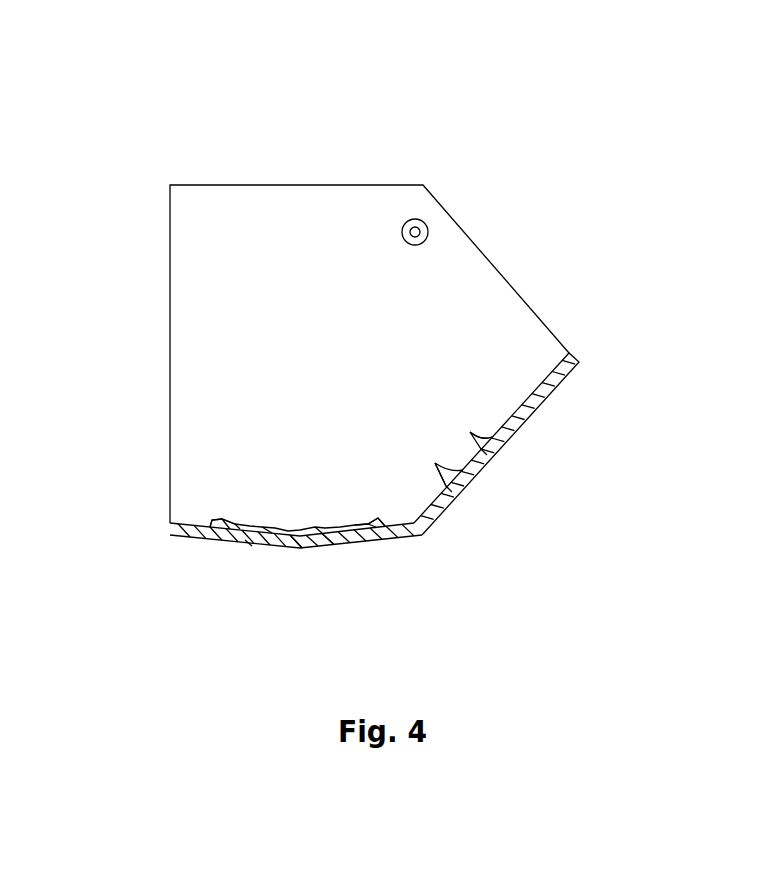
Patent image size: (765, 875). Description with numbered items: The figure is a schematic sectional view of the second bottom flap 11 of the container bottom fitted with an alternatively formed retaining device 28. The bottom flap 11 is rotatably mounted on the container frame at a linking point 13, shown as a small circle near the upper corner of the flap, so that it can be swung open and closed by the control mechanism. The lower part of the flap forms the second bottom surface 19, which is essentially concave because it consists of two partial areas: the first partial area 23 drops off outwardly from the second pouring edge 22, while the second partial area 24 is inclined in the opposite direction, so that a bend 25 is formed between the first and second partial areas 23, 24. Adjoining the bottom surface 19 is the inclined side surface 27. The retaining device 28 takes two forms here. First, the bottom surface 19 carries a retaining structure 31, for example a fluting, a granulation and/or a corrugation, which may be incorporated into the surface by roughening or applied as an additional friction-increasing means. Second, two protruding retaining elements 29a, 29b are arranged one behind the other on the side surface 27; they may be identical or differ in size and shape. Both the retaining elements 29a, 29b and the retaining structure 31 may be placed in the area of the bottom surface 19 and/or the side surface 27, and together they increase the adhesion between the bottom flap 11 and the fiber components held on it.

The second bottom flap 11 is at (250, 185).
The linking point 13 is at (416, 231).
The second bottom surface 19 is at (302, 546).
The second pouring edge 22 is at (170, 525).
The first partial area 23 is at (233, 524).
The second partial area 24 is at (367, 525).
The bend 25 is at (323, 544).
The side surface 27 is at (540, 404).
The retaining device 28 is at (437, 464).
The retaining element 29a is at (453, 483).
The retaining element 29b is at (480, 437).
The retaining structure 31 is at (300, 527).